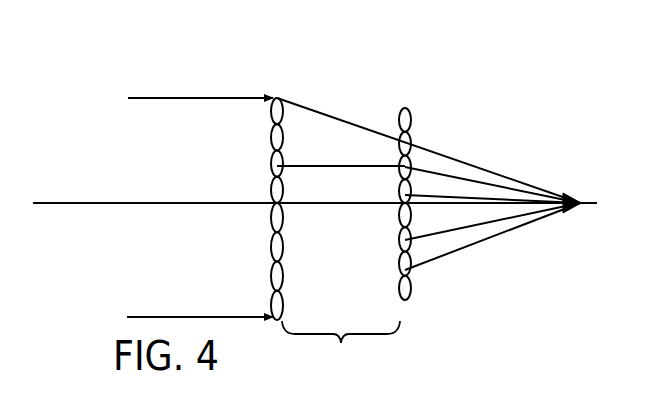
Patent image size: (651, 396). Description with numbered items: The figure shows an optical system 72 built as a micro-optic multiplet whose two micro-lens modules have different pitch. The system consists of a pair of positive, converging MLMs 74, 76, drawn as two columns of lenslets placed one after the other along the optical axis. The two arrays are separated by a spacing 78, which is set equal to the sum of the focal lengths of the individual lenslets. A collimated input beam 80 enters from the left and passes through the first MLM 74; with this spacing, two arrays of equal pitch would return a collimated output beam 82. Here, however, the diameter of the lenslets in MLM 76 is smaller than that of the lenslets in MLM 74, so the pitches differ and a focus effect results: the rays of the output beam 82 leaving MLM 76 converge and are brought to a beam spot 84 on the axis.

The optical system 72 is at (439, 341).
The micro-lens module 74 is at (278, 98).
The micro-lens module 76 is at (405, 108).
The spacing 78 is at (341, 347).
The collimated input beam 80 is at (181, 90).
The output beam 82 is at (487, 260).
The beam spot 84 is at (573, 196).